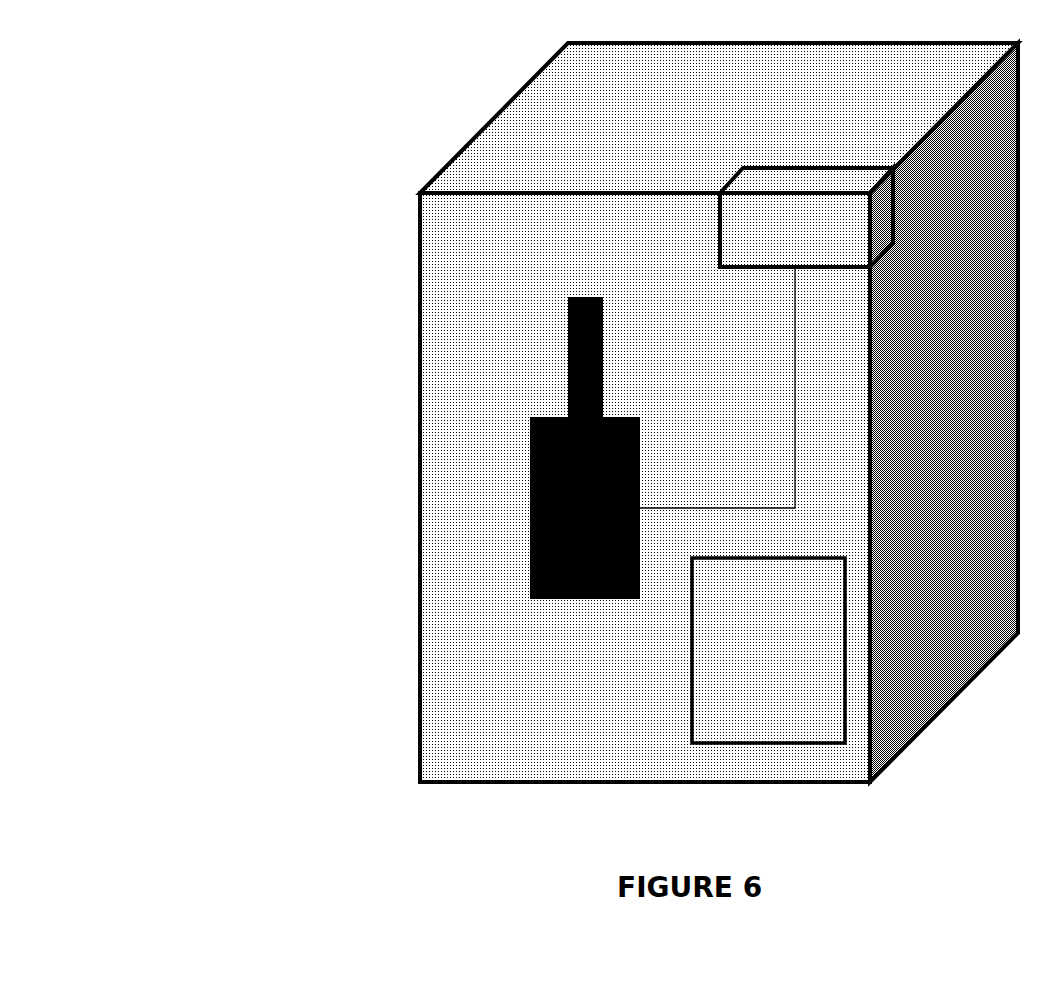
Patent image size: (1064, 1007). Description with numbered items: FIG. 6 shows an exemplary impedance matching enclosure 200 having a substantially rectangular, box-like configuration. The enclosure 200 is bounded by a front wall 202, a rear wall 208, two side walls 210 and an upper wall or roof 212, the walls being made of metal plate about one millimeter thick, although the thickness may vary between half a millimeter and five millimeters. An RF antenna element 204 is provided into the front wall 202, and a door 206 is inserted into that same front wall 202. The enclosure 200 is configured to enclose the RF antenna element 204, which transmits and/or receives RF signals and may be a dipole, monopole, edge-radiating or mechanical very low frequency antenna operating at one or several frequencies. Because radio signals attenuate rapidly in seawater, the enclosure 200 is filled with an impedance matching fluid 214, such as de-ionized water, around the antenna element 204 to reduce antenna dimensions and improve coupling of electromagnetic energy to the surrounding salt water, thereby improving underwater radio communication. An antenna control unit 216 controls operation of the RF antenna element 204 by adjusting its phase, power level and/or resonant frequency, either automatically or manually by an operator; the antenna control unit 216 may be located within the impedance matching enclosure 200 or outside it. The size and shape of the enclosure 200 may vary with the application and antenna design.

The impedance matching enclosure 200 is at (283, 120).
The front wall 202 is at (437, 353).
The RF antenna element 204 is at (520, 510).
The door 206 is at (798, 653).
The rear wall 208 is at (630, 40).
The side wall 210 is at (992, 420).
The upper wall or roof 212 is at (660, 122).
The impedance matching fluid 214 is at (640, 688).
The antenna control unit 216 is at (777, 180).